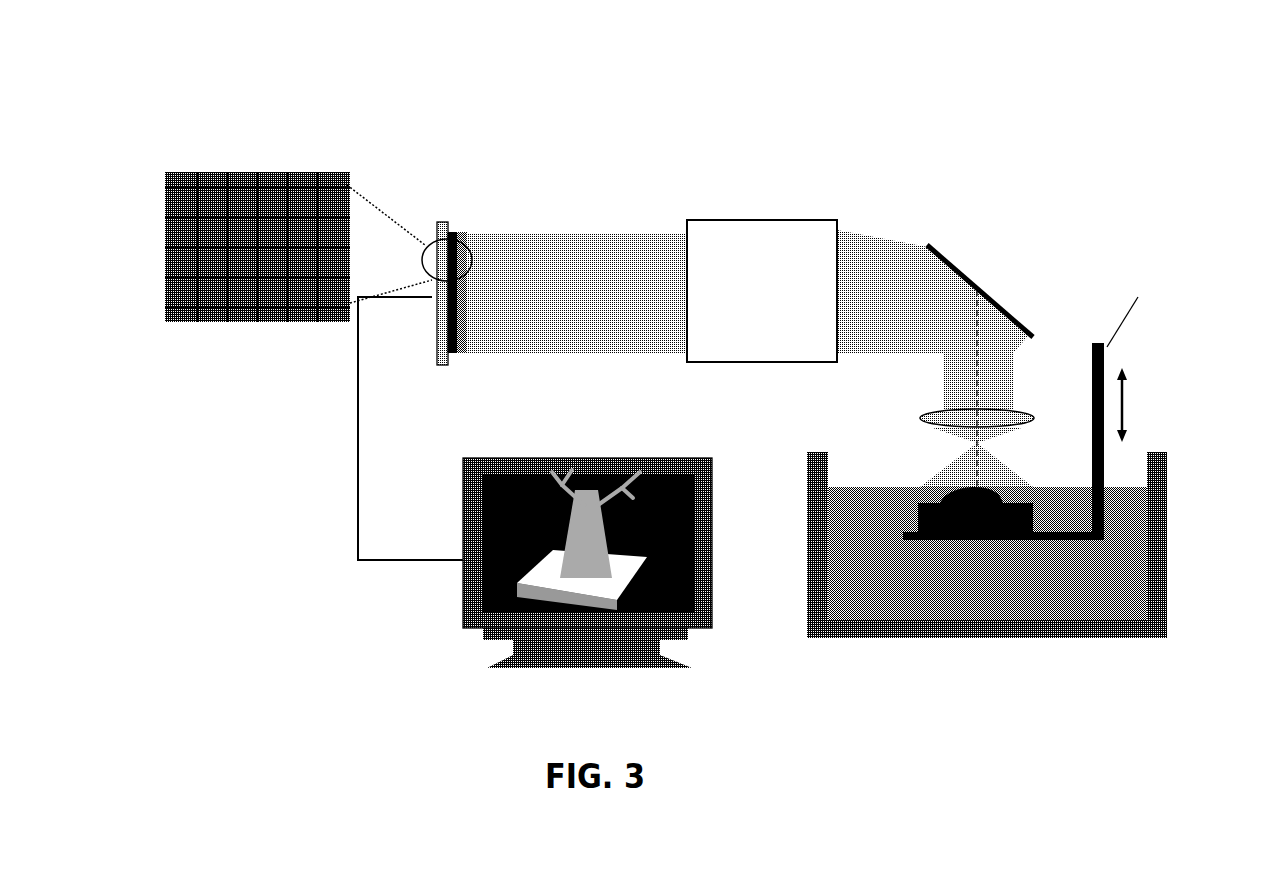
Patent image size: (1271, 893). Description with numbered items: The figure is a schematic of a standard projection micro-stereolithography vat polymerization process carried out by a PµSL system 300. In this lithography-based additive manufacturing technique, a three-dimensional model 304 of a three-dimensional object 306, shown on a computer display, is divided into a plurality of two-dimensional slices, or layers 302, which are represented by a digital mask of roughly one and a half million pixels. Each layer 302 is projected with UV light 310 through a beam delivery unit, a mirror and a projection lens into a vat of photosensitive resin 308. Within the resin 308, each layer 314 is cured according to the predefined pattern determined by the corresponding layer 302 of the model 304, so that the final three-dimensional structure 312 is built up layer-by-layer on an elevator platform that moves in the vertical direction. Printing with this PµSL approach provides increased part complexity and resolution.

The PµSL system 300 is at (209, 88).
The layer of a 3D model 302 is at (152, 246).
The 3D model 304 is at (452, 593).
The 3D object 306 is at (580, 557).
The photosensitive resin 308 is at (948, 604).
The UV light 310 is at (600, 299).
The 3D structure 312 is at (1058, 510).
The layer 314 is at (992, 488).